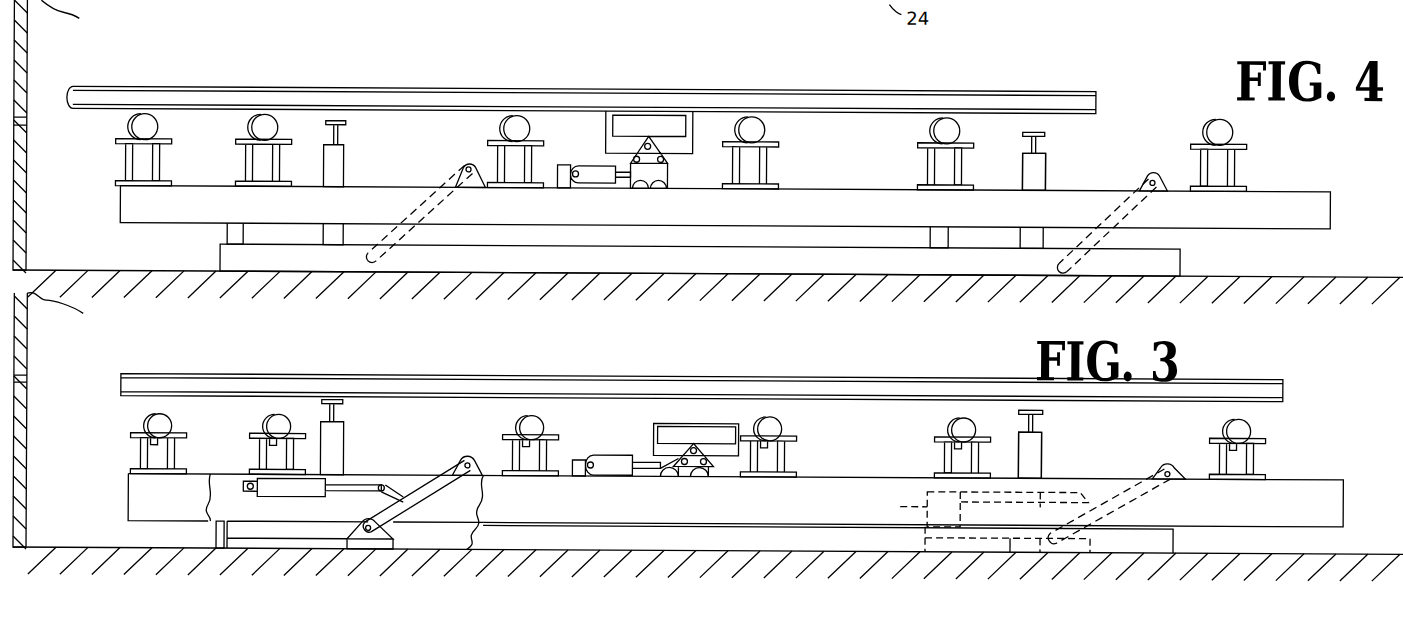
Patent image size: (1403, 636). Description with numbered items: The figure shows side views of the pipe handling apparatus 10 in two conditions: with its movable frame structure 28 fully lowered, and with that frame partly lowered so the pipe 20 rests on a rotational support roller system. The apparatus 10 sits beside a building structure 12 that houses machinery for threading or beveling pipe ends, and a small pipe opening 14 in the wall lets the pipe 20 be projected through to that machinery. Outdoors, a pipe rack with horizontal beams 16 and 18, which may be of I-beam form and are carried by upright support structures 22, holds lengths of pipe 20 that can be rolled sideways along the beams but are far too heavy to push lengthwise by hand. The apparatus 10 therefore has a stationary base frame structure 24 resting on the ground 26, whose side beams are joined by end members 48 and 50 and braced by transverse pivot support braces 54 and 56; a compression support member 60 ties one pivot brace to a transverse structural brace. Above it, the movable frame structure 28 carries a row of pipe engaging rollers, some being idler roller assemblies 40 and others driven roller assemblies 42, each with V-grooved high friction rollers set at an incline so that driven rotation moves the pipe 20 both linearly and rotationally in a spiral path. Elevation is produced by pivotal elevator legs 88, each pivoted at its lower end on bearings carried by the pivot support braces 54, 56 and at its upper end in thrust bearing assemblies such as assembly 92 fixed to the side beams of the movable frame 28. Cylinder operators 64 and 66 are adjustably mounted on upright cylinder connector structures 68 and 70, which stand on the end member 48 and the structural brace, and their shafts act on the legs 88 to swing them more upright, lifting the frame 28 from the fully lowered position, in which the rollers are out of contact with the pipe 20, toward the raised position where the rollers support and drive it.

In FIG. 4, the pipe handling apparatus 10 is at (1151, 79).
In FIG. 3, the pipe handling apparatus 10 is at (1258, 372).
In FIG. 4, the building structure 12 is at (28, 145).
In FIG. 3, the building structure 12 is at (26, 410).
In FIG. 4, the pipe opening 14 is at (22, 100).
In FIG. 3, the pipe opening 14 is at (26, 337).
In FIG. 4, the horizontal beam 16 is at (343, 124).
In FIG. 3, the horizontal beam 16 is at (342, 401).
In FIG. 4, the horizontal beam 18 is at (1044, 128).
In FIG. 3, the horizontal beam 18 is at (1041, 412).
In FIG. 4, the pipe 20 is at (552, 84).
In FIG. 3, the pipe 20 is at (540, 373).
In FIG. 4, the upright support structure 22 is at (1046, 167).
In FIG. 3, the upright support structure 22 is at (1042, 459).
In FIG. 4, the base frame structure 24 is at (904, 266).
In FIG. 3, the base frame structure 24 is at (896, 545).
In FIG. 4, the ground 26 is at (1334, 272).
In FIG. 3, the ground 26 is at (1328, 552).
In FIG. 4, the movable frame structure 28 is at (1330, 205).
In FIG. 3, the movable frame structure 28 is at (1318, 487).
In FIG. 4, the idler roller assembly 40 is at (252, 127).
In FIG. 3, the idler roller assembly 40 is at (277, 418).
In FIG. 4, the driven roller assembly 42 is at (530, 129).
In FIG. 3, the driven roller assembly 42 is at (531, 420).
In FIG. 3, the end member 48 is at (216, 535).
In FIG. 4, the end member 50 is at (1180, 262).
In FIG. 3, the end member 50 is at (1180, 540).
In FIG. 3, the transverse pivot support brace 54 is at (391, 549).
In FIG. 3, the transverse pivot support brace 56 is at (1088, 545).
In FIG. 3, the compression support member 60 is at (1012, 535).
In FIG. 4, the cylinder operator 64 is at (624, 150).
In FIG. 3, the cylinder operator 64 is at (325, 480).
In FIG. 3, the cylinder operator 66 is at (1018, 502).
In FIG. 4, the cylinder connector structure 68 is at (227, 237).
In FIG. 3, the cylinder connector structure 68 is at (210, 493).
In FIG. 3, the cylinder connector structure 70 is at (902, 500).
In FIG. 4, the pivotal elevator leg 88 is at (412, 204).
In FIG. 3, the pivotal elevator leg 88 is at (452, 470).
In FIG. 4, the thrust bearing assembly 92 is at (468, 165).
In FIG. 3, the thrust bearing assembly 92 is at (476, 457).